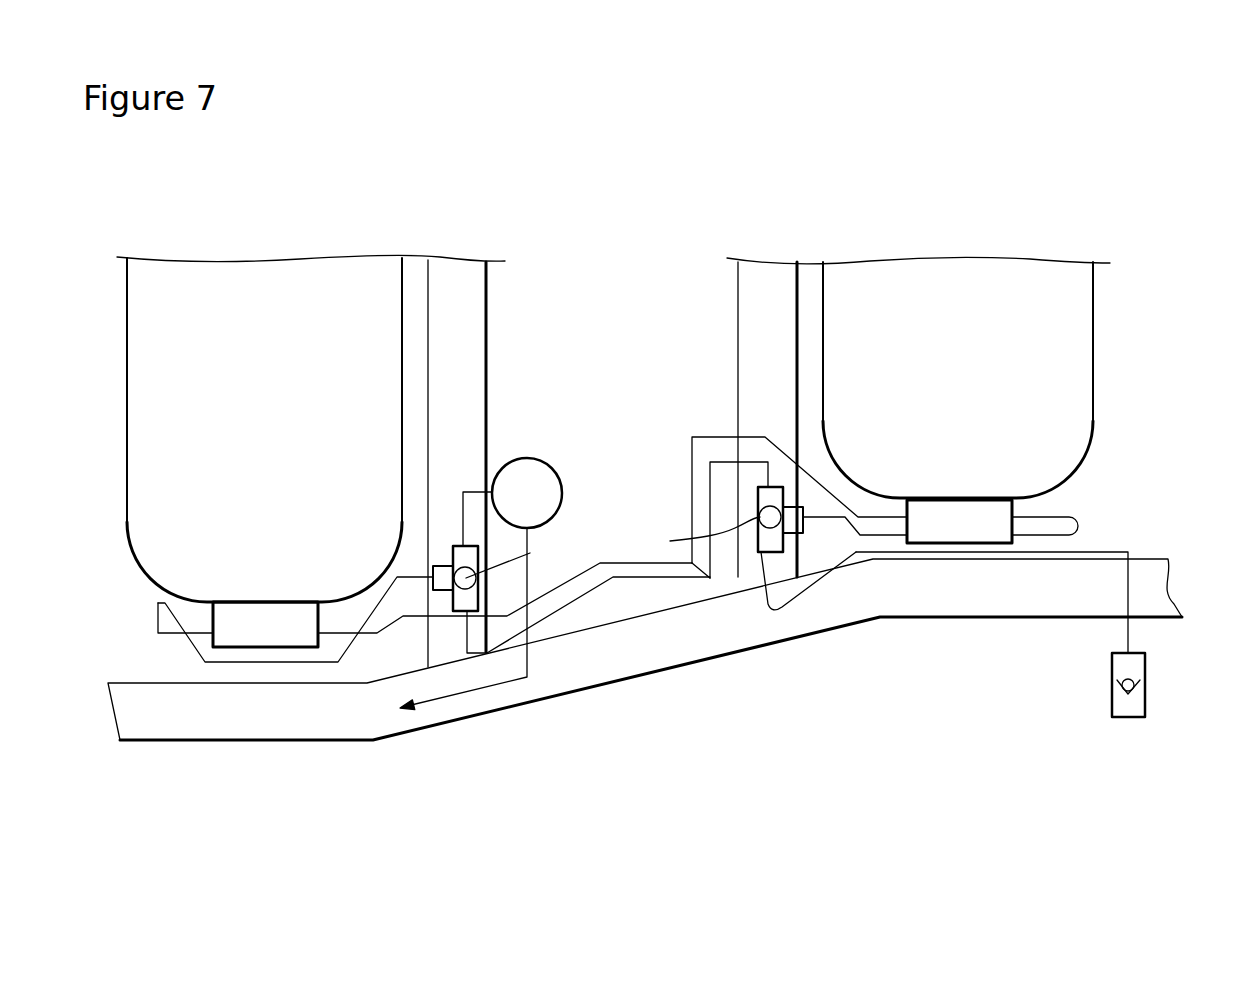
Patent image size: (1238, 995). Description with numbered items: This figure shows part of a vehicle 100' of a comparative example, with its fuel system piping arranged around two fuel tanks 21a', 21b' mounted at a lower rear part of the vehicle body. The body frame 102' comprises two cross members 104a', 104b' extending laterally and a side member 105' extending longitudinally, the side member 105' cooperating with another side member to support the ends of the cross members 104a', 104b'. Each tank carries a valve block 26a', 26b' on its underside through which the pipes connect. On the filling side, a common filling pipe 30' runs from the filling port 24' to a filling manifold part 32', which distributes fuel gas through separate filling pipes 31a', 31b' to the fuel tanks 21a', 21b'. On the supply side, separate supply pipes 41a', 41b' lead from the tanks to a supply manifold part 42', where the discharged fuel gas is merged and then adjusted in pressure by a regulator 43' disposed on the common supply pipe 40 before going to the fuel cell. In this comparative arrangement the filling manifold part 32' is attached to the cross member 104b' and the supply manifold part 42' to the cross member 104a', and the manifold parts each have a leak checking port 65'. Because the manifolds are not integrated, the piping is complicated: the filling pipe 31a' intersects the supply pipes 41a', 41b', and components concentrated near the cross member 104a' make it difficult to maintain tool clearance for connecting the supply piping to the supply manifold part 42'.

The vehicle 100' is at (685, 142).
The fuel tank 21a' is at (264, 396).
The fuel tank 21b' is at (958, 347).
The body frame 102' is at (641, 450).
The cross member 104a' is at (510, 463).
The cross member 104b' is at (787, 375).
The common supply pipe 40 is at (470, 490).
The regulator 43' is at (463, 559).
The supply manifold part 42' is at (596, 638).
The first tank valve block 26a' is at (265, 591).
The second tank valve block 26b' is at (969, 479).
The supply pipe 41a' is at (248, 619).
The supply pipe 41b' is at (784, 463).
The leak checking port 65' is at (832, 472).
The filling pipe 31a' is at (515, 608).
The filling pipe 31b' is at (1086, 496).
The filling manifold part 32' is at (798, 629).
The common filling pipe 30' is at (1045, 580).
The filling port 24' is at (1145, 726).
The side member 105' is at (645, 663).